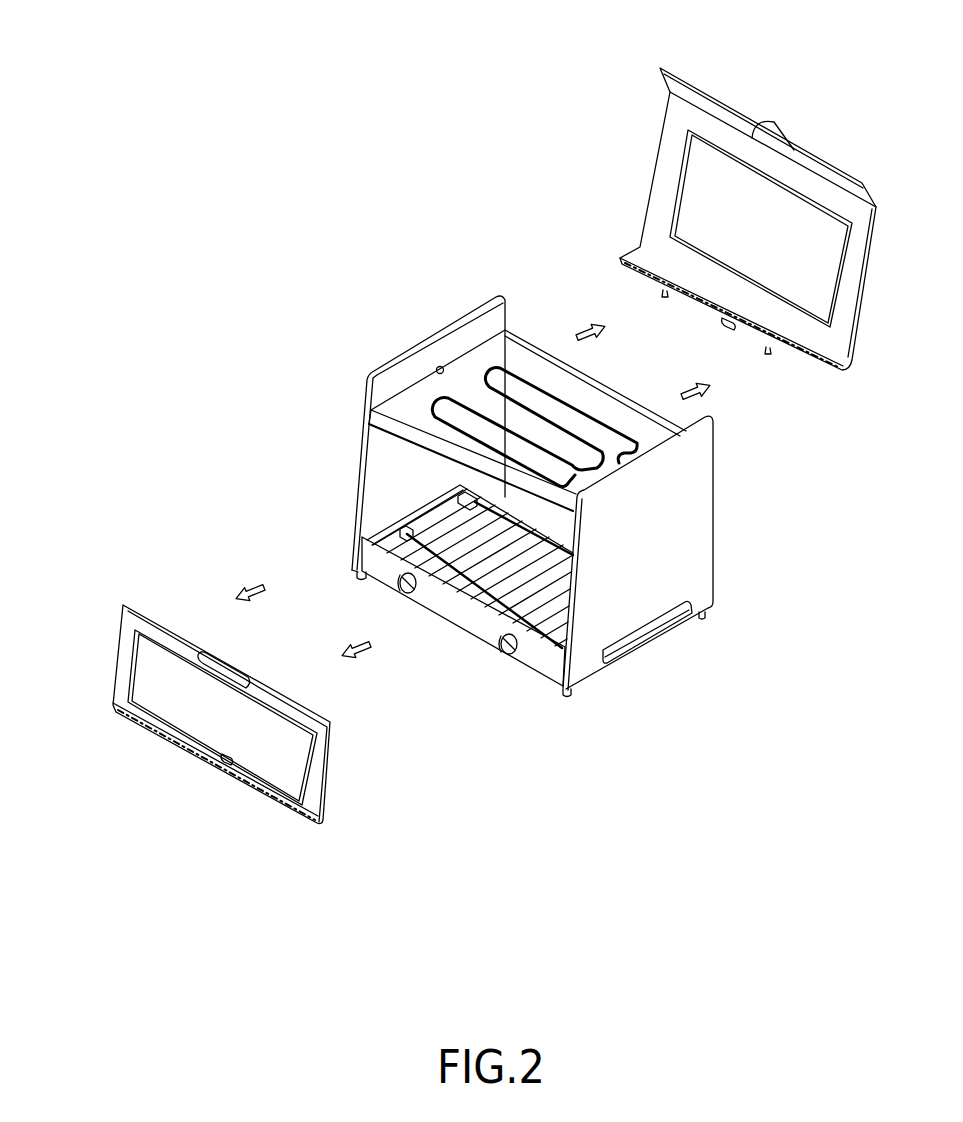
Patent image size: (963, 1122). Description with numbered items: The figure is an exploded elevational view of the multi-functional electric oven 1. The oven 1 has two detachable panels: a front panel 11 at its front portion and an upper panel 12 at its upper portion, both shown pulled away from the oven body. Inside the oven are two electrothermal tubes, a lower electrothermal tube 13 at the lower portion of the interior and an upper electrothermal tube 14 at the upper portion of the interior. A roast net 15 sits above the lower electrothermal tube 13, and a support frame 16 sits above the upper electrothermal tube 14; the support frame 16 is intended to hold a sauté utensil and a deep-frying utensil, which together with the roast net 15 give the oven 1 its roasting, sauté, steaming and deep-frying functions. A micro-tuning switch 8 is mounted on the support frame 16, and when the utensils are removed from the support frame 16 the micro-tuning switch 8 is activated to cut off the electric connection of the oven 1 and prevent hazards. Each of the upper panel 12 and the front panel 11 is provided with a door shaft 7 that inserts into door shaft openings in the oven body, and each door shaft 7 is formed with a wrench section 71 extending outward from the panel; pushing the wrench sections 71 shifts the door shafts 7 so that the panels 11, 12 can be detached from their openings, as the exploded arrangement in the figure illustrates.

The multi-functional electric oven 1 is at (471, 503).
The door shaft 7 is at (832, 378).
The micro-tuning switch 8 is at (440, 366).
The front panel 11 is at (127, 628).
The upper panel 12 is at (707, 92).
The lower electrothermal tube 13 is at (450, 565).
The upper electrothermal tube 14 is at (518, 370).
The roast net 15 is at (480, 603).
The support frame 16 is at (372, 413).
The wrench section 71 is at (730, 332).